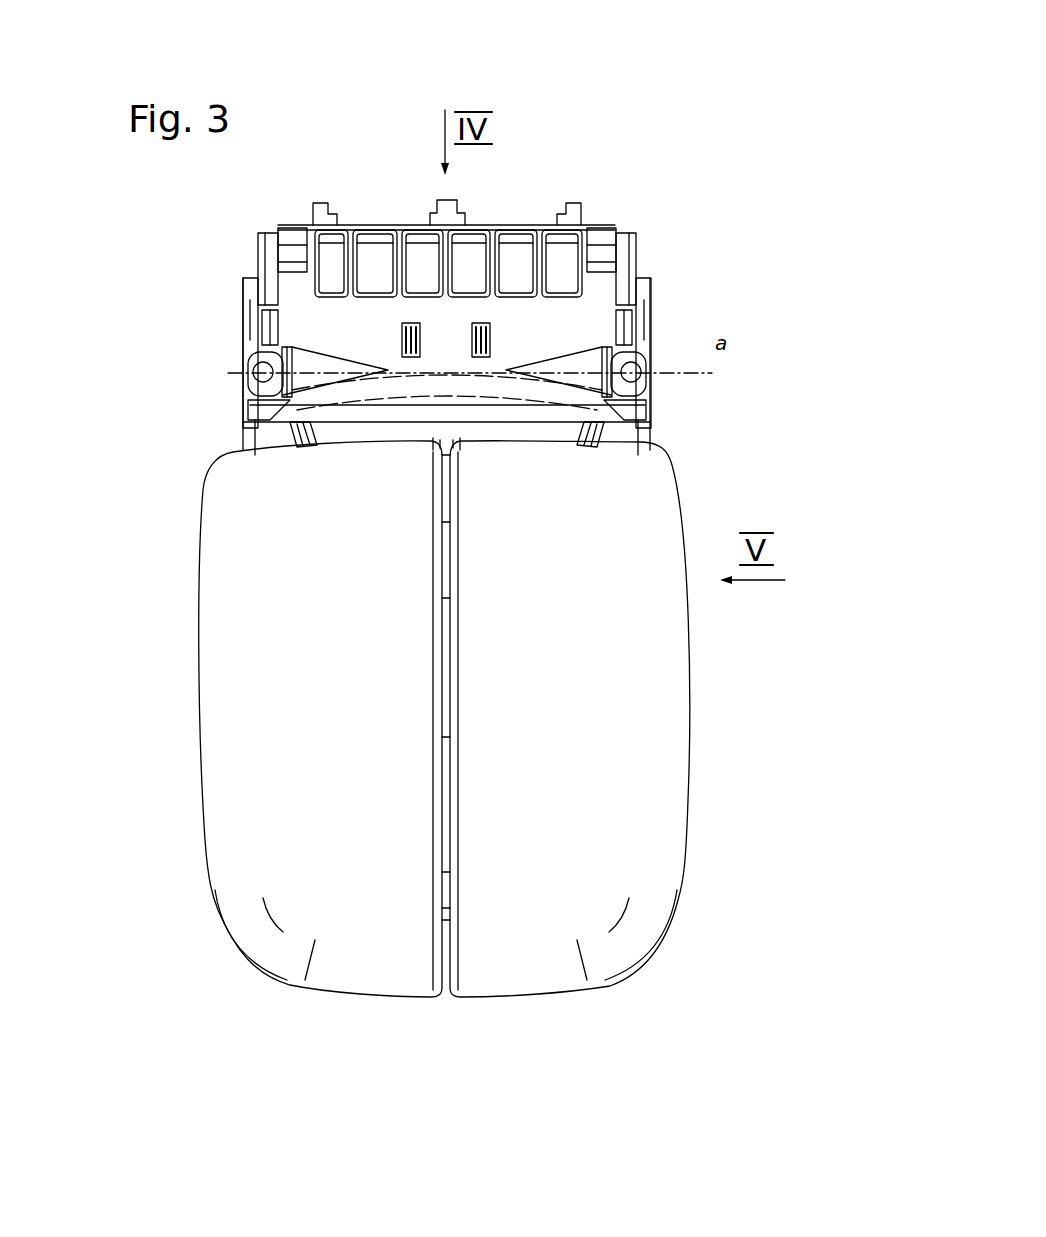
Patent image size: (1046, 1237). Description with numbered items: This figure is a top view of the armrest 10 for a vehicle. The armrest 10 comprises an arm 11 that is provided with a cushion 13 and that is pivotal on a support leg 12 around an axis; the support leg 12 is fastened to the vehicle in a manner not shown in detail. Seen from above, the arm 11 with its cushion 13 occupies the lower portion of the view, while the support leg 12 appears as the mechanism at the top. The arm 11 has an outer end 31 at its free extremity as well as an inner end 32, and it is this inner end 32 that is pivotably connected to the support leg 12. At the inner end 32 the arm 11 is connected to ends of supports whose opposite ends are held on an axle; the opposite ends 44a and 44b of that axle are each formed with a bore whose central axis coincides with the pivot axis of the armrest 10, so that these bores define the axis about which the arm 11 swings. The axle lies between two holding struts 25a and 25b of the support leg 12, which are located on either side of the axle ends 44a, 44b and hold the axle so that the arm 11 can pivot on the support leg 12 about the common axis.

The armrest 10 is at (608, 118).
The arm 11 is at (645, 768).
The support leg 12 is at (378, 305).
The cushion 13 is at (222, 652).
The holding strut 25a is at (592, 385).
The holding strut 25b is at (296, 384).
The outer end 31 is at (411, 1010).
The inner end 32 is at (428, 427).
The end of axle 44a is at (623, 344).
The end of axle 44b is at (272, 348).